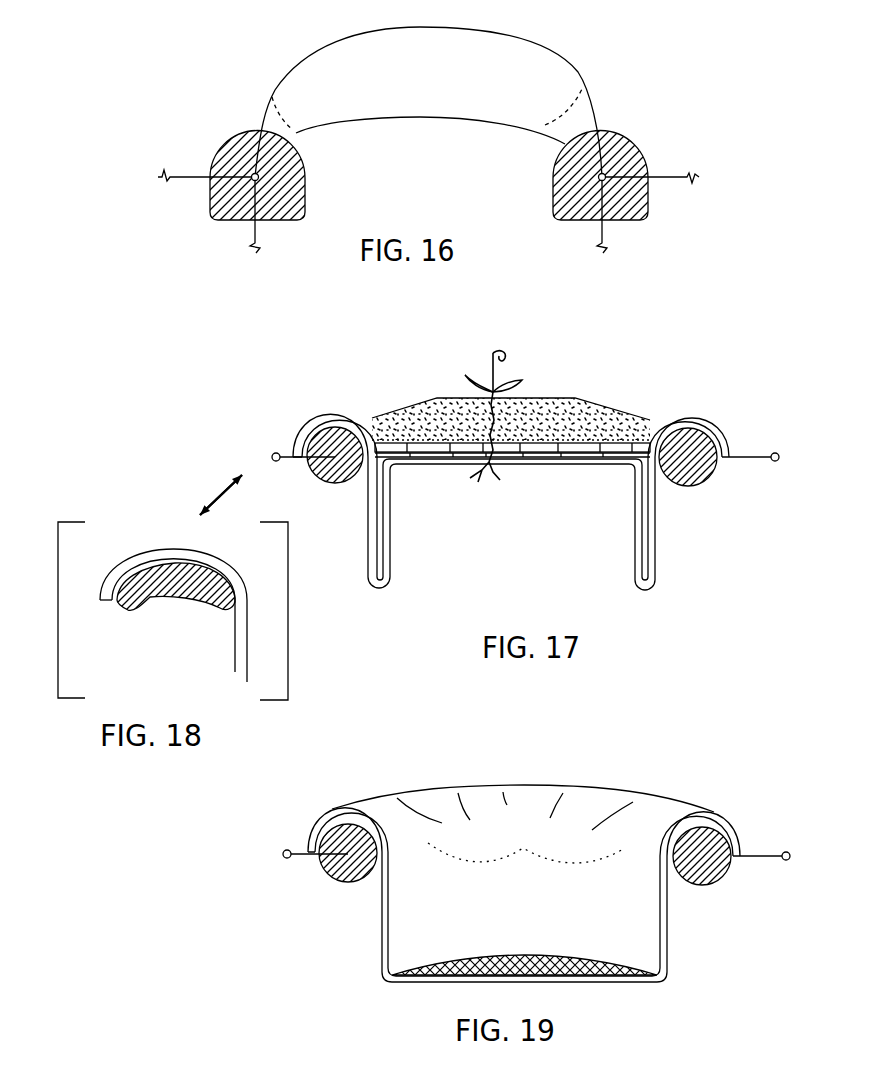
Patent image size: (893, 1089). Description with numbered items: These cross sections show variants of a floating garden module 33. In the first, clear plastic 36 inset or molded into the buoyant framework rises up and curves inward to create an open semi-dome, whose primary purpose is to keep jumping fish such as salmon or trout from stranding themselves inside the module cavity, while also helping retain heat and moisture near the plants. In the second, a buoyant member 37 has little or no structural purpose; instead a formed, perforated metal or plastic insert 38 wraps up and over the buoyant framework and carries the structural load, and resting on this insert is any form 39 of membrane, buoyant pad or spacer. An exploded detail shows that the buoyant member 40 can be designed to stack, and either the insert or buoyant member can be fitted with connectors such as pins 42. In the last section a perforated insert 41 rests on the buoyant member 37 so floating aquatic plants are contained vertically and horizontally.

In FIG. 16, the garden module 33 is at (232, 238).
In FIG. 16, the clear plastic 36 is at (586, 61).
In FIG. 17, the buoyant member 37 is at (695, 495).
In FIG. 19, the buoyant member 37 is at (334, 884).
In FIG. 17, the formed metal or plastic insert 38 is at (406, 506).
In FIG. 17, the form 39 is at (567, 427).
In FIG. 18, the buoyant member 40 is at (116, 622).
In FIG. 19, the perforated insert 41 is at (377, 988).
In FIG. 17, the pin 42 is at (272, 440).